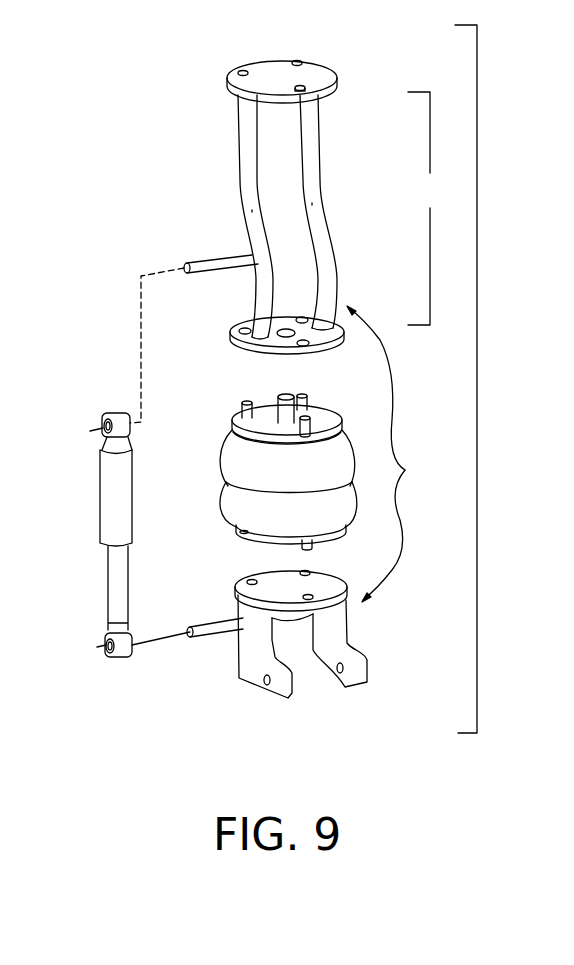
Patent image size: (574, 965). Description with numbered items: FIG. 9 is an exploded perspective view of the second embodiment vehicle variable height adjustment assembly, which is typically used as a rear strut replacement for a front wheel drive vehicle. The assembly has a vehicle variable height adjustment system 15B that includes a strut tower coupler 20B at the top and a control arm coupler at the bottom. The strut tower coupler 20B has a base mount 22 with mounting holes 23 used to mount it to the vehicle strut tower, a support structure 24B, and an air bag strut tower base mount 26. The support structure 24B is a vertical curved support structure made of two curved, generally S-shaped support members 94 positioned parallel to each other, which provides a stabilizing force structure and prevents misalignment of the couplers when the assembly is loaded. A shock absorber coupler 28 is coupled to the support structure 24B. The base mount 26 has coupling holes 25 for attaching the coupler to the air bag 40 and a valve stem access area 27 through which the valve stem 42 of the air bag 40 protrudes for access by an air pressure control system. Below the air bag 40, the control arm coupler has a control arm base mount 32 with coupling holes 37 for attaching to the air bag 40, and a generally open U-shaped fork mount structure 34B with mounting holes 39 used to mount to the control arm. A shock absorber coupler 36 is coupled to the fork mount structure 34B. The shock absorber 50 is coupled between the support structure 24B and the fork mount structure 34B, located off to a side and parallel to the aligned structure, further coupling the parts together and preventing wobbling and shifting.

The base mount 22 is at (325, 65).
The mounting holes 23 is at (297, 62).
The support structure 24B is at (330, 157).
The support members 94 is at (312, 203).
The shock absorber coupler 28 is at (214, 258).
The air bag strut tower base mount 26 is at (240, 327).
The coupling holes 25 is at (240, 338).
The valve stem access area 27 is at (285, 342).
The valve stem 42 is at (292, 402).
The air bag 40 is at (232, 455).
The coupling holes 37 is at (308, 597).
The control arm base mount 32 is at (238, 590).
The shock absorber coupler 36 is at (213, 627).
The fork mount structure 34B is at (337, 622).
The mounting holes 39 is at (338, 680).
The shock absorber 50 is at (115, 497).
The strut tower coupler 20B is at (452, 379).
The vehicle variable height adjustment system 15B is at (405, 470).